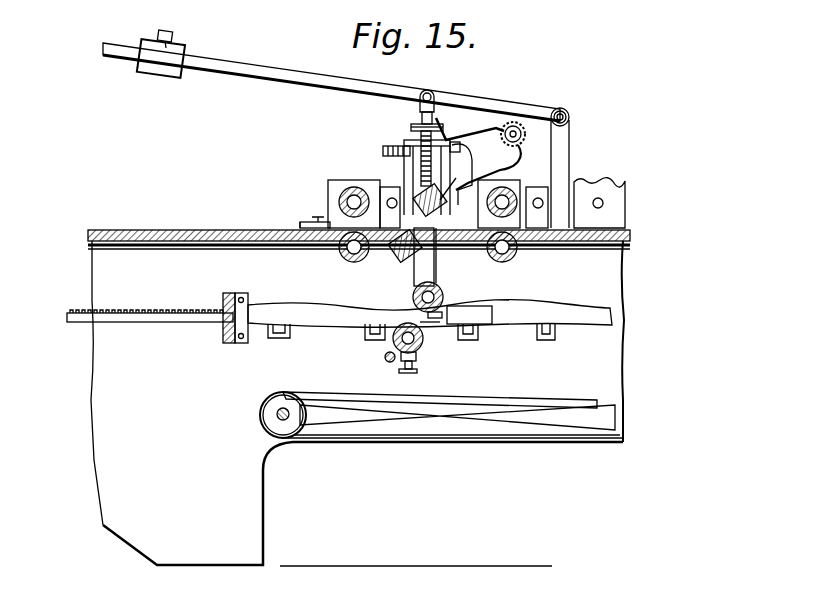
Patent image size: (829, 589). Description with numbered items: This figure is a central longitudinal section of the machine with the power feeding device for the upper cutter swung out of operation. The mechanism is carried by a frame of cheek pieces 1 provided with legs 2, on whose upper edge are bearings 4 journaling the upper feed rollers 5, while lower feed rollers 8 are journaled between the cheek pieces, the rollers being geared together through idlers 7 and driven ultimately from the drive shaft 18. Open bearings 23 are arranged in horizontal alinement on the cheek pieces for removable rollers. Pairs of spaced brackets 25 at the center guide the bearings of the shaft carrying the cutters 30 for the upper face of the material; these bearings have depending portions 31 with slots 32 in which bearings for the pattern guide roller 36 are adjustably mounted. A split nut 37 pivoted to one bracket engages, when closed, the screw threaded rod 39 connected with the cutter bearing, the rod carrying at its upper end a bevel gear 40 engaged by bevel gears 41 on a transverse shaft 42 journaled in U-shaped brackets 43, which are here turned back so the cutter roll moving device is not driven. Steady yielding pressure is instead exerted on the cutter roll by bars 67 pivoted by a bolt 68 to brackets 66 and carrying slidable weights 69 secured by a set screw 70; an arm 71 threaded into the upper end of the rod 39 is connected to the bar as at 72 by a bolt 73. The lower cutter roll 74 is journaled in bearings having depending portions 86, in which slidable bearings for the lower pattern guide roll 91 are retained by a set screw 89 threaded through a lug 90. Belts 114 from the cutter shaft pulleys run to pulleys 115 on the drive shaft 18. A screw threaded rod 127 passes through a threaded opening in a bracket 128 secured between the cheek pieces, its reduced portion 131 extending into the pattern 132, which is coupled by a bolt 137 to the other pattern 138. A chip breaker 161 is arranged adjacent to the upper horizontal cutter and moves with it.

The cheek pieces 1 is at (359, 377).
The legs 2 is at (363, 504).
The bearings 4 is at (429, 189).
The upper feed rollers 5 is at (349, 187).
The idlers 7 is at (390, 186).
The lower feed rollers 8 is at (340, 253).
The drive shaft 18 is at (277, 414).
The open bearings 23 is at (486, 349).
The brackets 25 is at (452, 180).
The cutters 30 is at (430, 205).
The depending portions 31 is at (440, 262).
The slots 32 is at (445, 300).
The pattern guide roller 36 is at (470, 303).
The split nut 37 is at (386, 151).
The screw threaded rod 39 is at (421, 142).
The bevel gear 40 is at (412, 124).
The bevel gears 41 is at (571, 127).
The transverse shaft 42 is at (520, 124).
The U-shaped brackets 43 is at (472, 124).
The brackets 66 is at (569, 114).
The bars 67 is at (377, 82).
The bolt 68 is at (562, 109).
The weights 69 is at (165, 70).
The set screw 70 is at (170, 36).
The arm 71 is at (433, 108).
The connection 72 is at (427, 92).
The bolt 73 is at (420, 100).
The lower cutter roll 74 is at (398, 256).
The depending portions 86 is at (414, 297).
The set screw 89 is at (418, 354).
The lug 90 is at (391, 362).
The pattern guide roll 91 is at (422, 335).
The belts 114 is at (378, 406).
The pulleys 115 is at (266, 406).
The screw threaded rod 127 is at (200, 320).
The bracket 128 is at (222, 300).
The reduced portion 131 is at (248, 303).
The pattern 132 is at (300, 327).
The bolt 137 is at (469, 315).
The pattern 138 is at (602, 318).
The chip breaker 161 is at (338, 225).